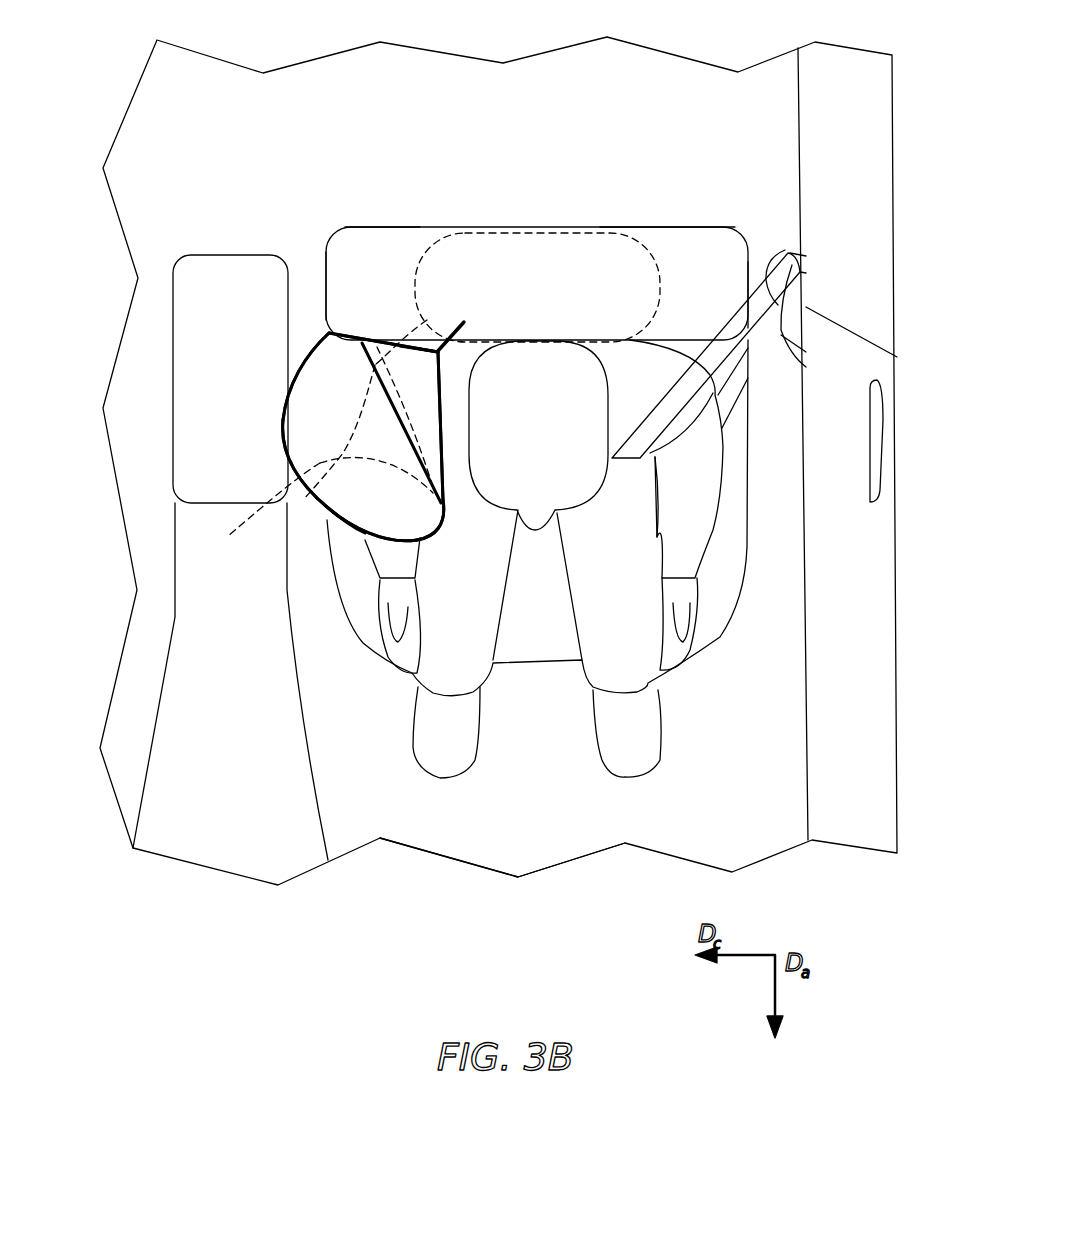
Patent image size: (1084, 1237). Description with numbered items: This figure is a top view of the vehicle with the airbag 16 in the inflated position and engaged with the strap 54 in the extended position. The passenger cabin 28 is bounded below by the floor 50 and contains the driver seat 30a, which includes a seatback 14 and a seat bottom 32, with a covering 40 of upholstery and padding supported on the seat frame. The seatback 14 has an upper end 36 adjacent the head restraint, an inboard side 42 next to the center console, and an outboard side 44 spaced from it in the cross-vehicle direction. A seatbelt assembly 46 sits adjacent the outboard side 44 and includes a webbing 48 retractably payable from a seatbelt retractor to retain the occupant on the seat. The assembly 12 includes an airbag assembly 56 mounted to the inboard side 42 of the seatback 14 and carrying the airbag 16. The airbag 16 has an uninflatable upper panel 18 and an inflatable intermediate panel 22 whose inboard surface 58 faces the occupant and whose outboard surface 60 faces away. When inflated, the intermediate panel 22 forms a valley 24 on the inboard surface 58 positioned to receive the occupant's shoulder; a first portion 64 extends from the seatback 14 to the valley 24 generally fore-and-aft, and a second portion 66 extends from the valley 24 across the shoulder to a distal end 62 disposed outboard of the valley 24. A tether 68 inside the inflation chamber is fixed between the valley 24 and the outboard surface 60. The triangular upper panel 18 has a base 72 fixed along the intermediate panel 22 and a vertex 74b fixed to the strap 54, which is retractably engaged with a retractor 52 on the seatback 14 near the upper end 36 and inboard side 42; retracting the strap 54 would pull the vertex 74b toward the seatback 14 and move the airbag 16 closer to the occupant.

The assembly 12 is at (751, 162).
The seatback 14 is at (375, 226).
The airbag 16 is at (271, 453).
The upper panel 18 is at (449, 410).
The intermediate panel 22 is at (440, 538).
The valley 24 is at (356, 446).
The passenger cabin 28 is at (285, 124).
The driver seat 30a is at (605, 223).
The seat bottom 32 is at (738, 608).
The upper end 36 is at (690, 223).
The covering 40 is at (712, 298).
The inboard side 42 is at (326, 256).
The outboard side 44 is at (752, 258).
The seatbelt assembly 46 is at (763, 341).
The webbing 48 is at (790, 247).
The floor 50 is at (552, 817).
The retractor 52 is at (463, 325).
The strap 54 is at (433, 341).
The airbag assembly 56 is at (379, 310).
The inboard surface 58 is at (442, 473).
The outboard surface 60 is at (338, 529).
The distal end 62 is at (447, 521).
The first portion 64 is at (279, 398).
The second portion 66 is at (352, 543).
The tether 68 is at (260, 507).
The base 72 is at (442, 438).
The vertex of the upper panel 74b is at (440, 355).